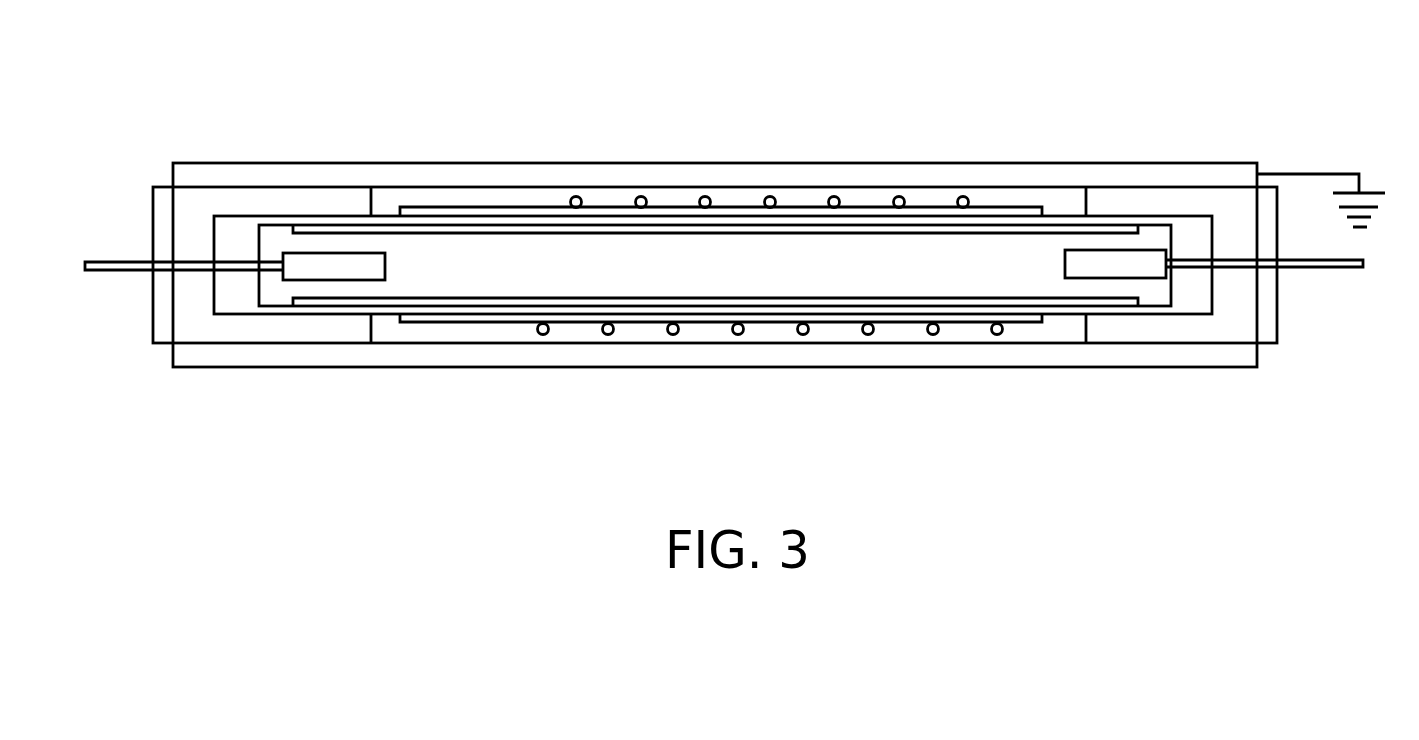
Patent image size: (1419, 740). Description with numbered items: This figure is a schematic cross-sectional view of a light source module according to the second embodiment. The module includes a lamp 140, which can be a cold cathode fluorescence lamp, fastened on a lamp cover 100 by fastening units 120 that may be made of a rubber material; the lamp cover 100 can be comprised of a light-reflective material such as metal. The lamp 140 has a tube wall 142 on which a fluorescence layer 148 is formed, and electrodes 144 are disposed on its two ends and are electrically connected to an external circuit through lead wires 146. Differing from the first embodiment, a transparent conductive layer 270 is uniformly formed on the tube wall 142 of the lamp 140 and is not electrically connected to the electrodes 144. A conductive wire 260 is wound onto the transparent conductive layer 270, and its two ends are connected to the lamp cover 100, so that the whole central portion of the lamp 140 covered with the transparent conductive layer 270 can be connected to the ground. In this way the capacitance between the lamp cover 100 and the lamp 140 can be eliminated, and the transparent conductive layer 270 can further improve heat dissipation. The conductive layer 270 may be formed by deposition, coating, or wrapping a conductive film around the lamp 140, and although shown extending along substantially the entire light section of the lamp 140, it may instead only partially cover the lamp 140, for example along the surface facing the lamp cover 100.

The lamp cover 100 is at (716, 175).
The fastening units 120 is at (1255, 323).
The lamp 140 is at (724, 353).
The tube wall 142 is at (408, 312).
The electrodes 144 is at (318, 268).
The lead wires 146 is at (417, 432).
The fluorescence layer 148 is at (347, 303).
The conductive wire 260 is at (837, 200).
The transparent conductive layer 270 is at (660, 212).